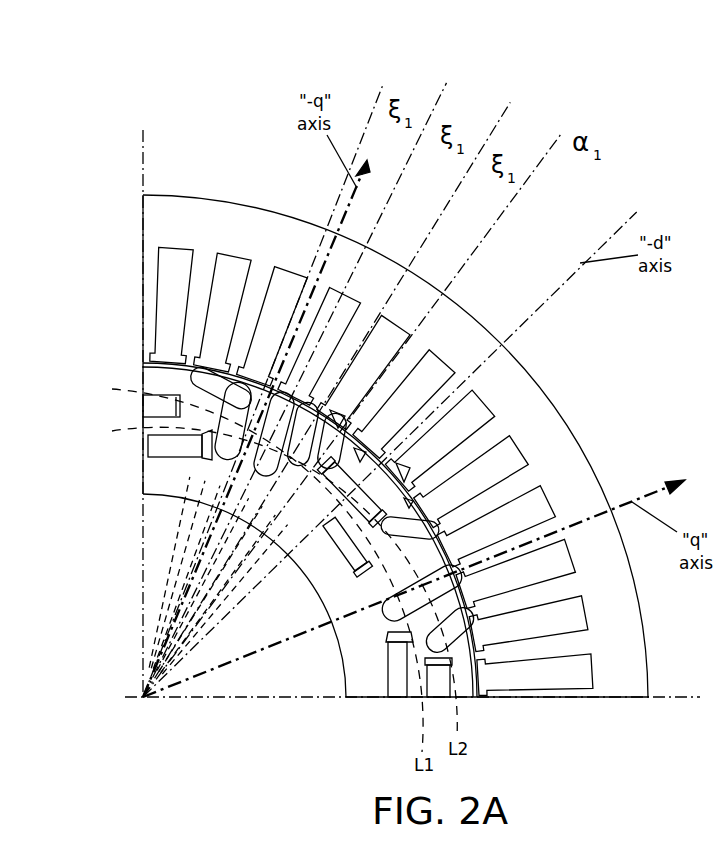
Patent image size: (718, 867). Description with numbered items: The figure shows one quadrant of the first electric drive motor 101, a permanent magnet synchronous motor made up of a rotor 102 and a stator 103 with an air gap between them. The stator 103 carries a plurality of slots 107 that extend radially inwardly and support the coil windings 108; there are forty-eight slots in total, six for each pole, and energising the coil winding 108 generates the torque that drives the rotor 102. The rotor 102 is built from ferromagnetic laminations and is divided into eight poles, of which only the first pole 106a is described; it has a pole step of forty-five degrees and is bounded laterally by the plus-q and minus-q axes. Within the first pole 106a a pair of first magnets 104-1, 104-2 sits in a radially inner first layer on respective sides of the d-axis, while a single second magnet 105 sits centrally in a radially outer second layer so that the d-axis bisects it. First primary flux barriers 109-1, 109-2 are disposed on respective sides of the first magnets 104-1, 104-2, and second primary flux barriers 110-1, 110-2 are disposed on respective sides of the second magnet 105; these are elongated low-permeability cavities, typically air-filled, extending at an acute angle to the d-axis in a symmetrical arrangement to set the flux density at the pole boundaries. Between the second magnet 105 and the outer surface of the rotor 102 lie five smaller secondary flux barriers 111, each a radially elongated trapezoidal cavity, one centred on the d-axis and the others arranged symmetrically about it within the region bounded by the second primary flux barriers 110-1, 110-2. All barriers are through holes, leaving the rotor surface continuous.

The first electric drive motor 101 is at (196, 112).
The rotor 102 is at (368, 500).
The stator 103 is at (333, 416).
The first magnet 104-1 is at (312, 506).
The first magnet 104-2 is at (347, 550).
The second magnet 105 is at (403, 472).
The first pole 106a is at (306, 589).
The slot 107 is at (195, 280).
The coil winding 108 is at (172, 325).
The first primary flux barrier 109-1 is at (262, 457).
The first primary flux barrier 109-2 is at (383, 580).
The second primary flux barrier 110-1 is at (335, 418).
The second primary flux barrier 110-2 is at (372, 566).
The secondary flux barrier 111 is at (387, 530).